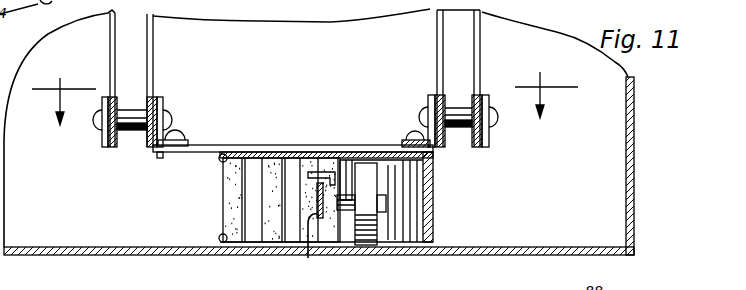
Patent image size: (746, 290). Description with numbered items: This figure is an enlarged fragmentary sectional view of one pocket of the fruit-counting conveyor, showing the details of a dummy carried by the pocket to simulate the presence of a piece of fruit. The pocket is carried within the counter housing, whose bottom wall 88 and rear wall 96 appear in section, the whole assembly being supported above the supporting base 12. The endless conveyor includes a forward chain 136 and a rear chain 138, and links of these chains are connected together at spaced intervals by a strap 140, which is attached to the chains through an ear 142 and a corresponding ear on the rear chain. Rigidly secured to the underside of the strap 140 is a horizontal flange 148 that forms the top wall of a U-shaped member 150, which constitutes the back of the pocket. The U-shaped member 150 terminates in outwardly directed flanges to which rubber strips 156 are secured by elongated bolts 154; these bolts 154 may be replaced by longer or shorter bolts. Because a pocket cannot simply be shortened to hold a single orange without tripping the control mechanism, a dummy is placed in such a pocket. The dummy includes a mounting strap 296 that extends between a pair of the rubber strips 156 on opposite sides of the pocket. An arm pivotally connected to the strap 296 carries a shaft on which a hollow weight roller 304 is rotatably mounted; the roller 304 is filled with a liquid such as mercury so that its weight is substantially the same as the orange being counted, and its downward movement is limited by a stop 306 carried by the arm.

The supporting base 12 is at (305, 89).
The bottom wall 88 is at (553, 250).
The rear wall 96 is at (633, 170).
The forward chain 136 is at (148, 101).
The rear chain 138 is at (479, 148).
The strap 140 is at (357, 143).
The ear 142 is at (406, 138).
The horizontal flange 148 is at (406, 157).
The U-shaped member 150 is at (433, 206).
The elongated bolt 154 is at (219, 238).
The rubber strip 156 is at (272, 157).
The mounting strap 296 is at (304, 247).
The hollow weight roller 304 is at (373, 230).
The stop 306 is at (316, 171).